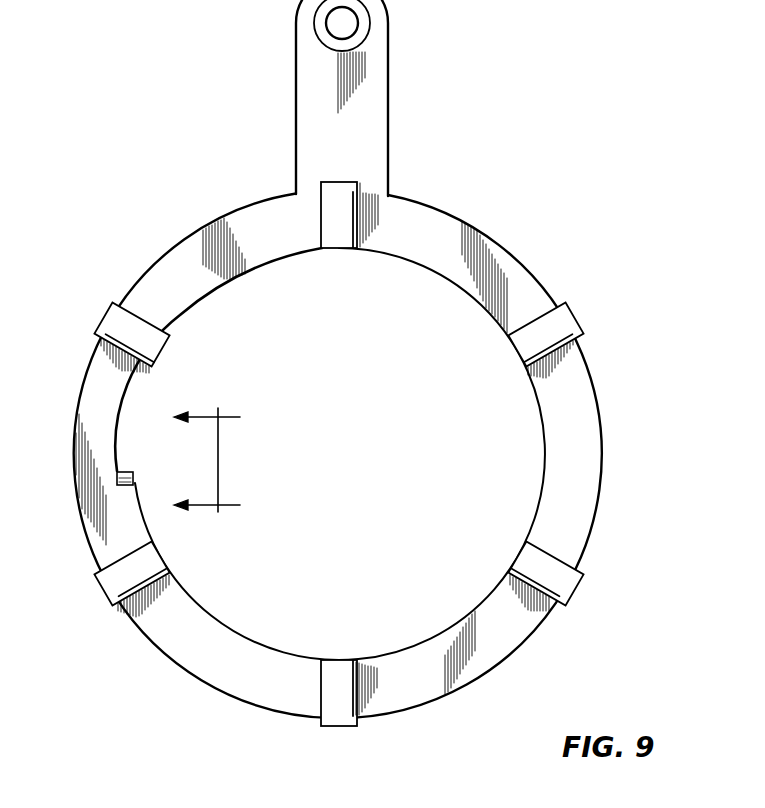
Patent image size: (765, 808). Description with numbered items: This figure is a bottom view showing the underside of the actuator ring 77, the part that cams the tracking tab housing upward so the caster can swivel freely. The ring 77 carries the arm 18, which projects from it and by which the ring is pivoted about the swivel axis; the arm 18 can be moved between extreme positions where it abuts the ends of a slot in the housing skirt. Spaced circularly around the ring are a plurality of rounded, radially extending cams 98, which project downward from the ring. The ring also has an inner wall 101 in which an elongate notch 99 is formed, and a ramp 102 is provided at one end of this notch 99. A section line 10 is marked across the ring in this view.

The arm 18 is at (368, 94).
The actuator ring 77 is at (217, 258).
The cams 98 is at (345, 200).
The elongate notch 99 is at (133, 367).
The inner wall 101 is at (200, 604).
The ramp 102 is at (125, 470).
The section line 10- 10 is at (219, 464).